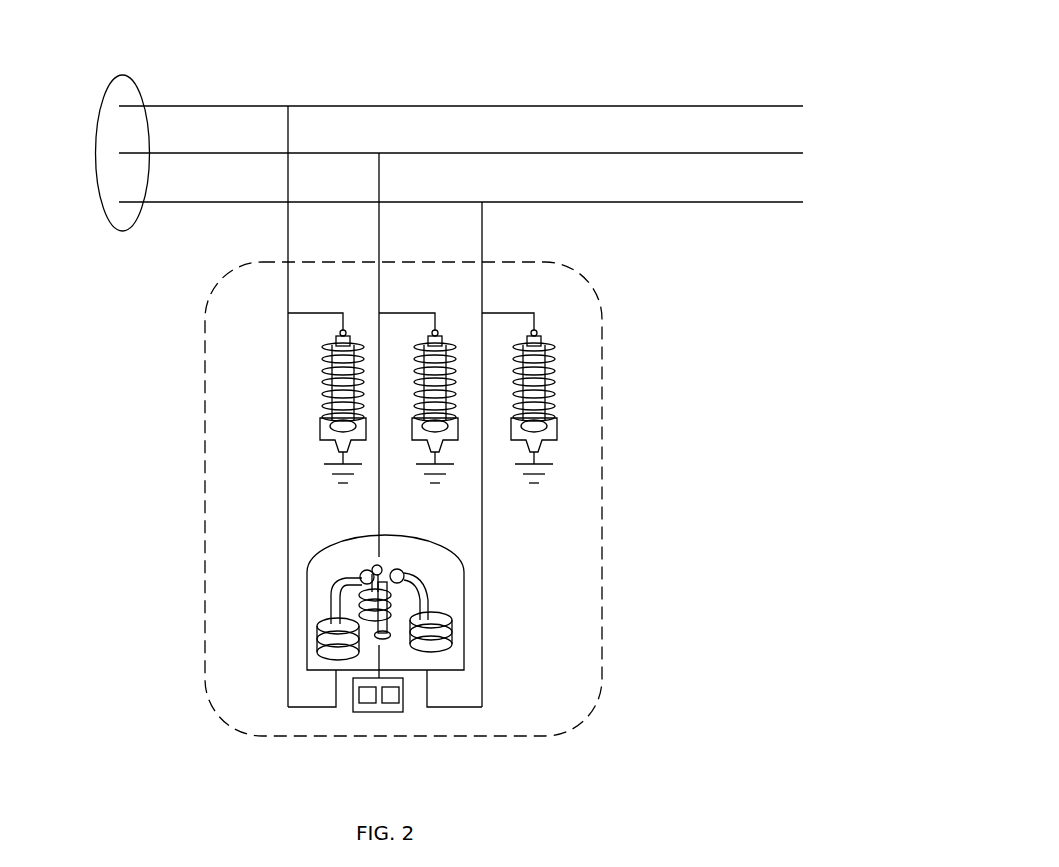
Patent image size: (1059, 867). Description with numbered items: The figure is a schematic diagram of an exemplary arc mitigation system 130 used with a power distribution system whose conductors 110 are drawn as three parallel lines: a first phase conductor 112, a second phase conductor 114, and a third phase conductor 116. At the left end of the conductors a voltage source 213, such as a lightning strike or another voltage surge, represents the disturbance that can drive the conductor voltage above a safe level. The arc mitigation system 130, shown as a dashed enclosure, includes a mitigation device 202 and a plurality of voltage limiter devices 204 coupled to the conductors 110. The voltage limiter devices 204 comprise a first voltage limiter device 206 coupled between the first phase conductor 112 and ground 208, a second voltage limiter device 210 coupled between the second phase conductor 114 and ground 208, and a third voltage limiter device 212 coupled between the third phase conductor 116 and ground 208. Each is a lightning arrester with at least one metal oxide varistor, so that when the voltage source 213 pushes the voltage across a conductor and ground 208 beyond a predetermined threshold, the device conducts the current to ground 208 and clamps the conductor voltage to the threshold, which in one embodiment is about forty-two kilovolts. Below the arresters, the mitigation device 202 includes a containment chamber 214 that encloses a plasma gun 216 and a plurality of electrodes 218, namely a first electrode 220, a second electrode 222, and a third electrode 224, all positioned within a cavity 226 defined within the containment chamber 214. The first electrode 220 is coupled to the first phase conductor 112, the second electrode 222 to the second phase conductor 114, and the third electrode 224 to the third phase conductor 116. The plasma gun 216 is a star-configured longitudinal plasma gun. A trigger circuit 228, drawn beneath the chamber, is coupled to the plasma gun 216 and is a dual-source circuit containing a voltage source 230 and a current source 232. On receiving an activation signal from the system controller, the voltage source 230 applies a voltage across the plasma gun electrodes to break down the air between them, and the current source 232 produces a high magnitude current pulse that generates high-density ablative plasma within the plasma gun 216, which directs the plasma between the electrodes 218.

The conductors 110 is at (461, 101).
The first phase conductor 112 is at (607, 106).
The second phase conductor 114 is at (662, 153).
The third phase conductor 116 is at (449, 78).
The voltage source 213 is at (122, 75).
The arc mitigation system 130 is at (598, 298).
The voltage limiter devices 204 is at (399, 347).
The first voltage limiter device 206 is at (303, 352).
The second voltage limiter device 210 is at (398, 350).
The third voltage limiter device 212 is at (490, 348).
The ground 208 is at (515, 496).
The mitigation device 202 is at (394, 598).
The electrodes 218 is at (330, 560).
The cavity 226 is at (406, 551).
The second electrode 222 is at (365, 575).
The third electrode 224 is at (430, 570).
The first electrode 220 is at (330, 612).
The containment chamber 214 is at (465, 606).
The plasma gun 216 is at (388, 640).
The trigger circuit 228 is at (411, 738).
The current source 232 is at (372, 712).
The voltage source 230 is at (398, 712).